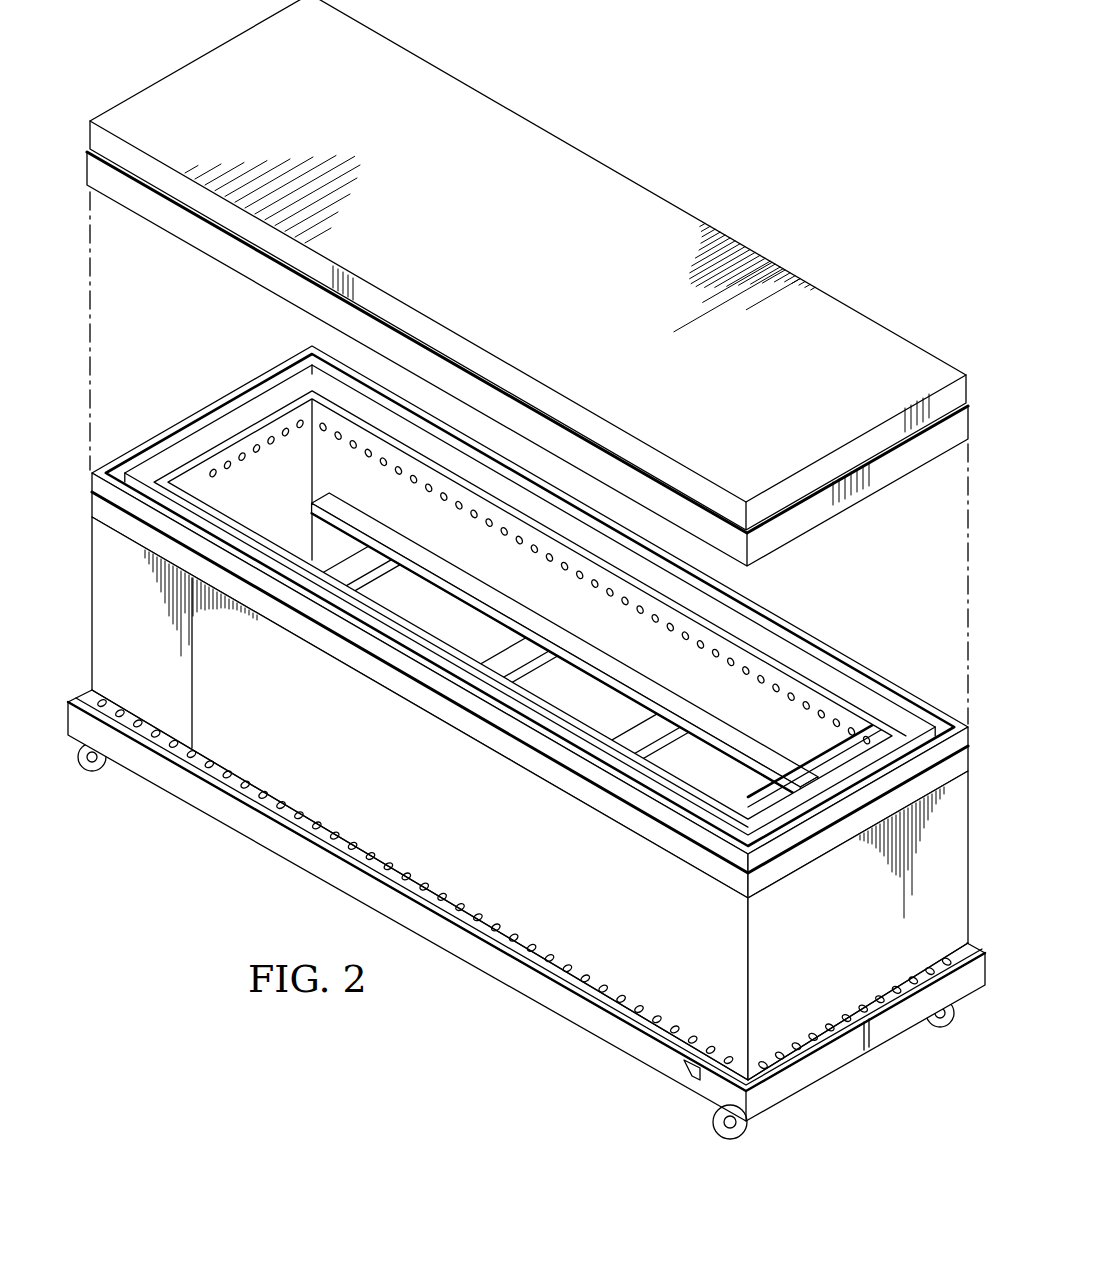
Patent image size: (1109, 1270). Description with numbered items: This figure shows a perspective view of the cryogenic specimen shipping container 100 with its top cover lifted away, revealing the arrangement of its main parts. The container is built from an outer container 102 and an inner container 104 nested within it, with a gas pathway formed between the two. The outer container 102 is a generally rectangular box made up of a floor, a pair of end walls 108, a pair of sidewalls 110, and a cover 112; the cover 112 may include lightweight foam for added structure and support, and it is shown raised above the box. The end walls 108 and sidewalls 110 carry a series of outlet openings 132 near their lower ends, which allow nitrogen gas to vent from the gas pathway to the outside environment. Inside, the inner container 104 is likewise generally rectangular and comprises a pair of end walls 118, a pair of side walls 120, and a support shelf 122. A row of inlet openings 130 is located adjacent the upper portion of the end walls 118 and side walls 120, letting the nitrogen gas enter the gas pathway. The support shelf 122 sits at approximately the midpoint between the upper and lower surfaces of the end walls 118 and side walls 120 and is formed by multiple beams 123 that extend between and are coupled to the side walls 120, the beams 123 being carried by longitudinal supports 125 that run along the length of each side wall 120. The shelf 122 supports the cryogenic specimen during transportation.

The cryogenic specimen shipping container 100 is at (529, 569).
The outer container 102 is at (529, 742).
The inner container 104 is at (538, 630).
The end walls 108 is at (864, 980).
The sidewalls 110 is at (529, 914).
The cover 112 is at (864, 330).
The end walls 118 is at (192, 492).
The side walls 120 is at (788, 692).
The support shelf 122 is at (327, 546).
The beams 123 is at (490, 656).
The longitudinal supports 125 is at (795, 786).
The inlet openings 130 is at (276, 441).
The outlet openings 132 is at (578, 985).